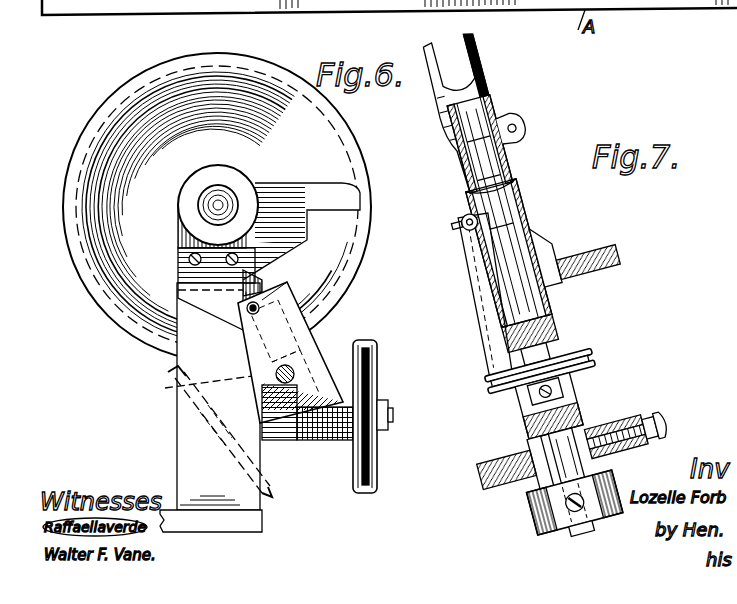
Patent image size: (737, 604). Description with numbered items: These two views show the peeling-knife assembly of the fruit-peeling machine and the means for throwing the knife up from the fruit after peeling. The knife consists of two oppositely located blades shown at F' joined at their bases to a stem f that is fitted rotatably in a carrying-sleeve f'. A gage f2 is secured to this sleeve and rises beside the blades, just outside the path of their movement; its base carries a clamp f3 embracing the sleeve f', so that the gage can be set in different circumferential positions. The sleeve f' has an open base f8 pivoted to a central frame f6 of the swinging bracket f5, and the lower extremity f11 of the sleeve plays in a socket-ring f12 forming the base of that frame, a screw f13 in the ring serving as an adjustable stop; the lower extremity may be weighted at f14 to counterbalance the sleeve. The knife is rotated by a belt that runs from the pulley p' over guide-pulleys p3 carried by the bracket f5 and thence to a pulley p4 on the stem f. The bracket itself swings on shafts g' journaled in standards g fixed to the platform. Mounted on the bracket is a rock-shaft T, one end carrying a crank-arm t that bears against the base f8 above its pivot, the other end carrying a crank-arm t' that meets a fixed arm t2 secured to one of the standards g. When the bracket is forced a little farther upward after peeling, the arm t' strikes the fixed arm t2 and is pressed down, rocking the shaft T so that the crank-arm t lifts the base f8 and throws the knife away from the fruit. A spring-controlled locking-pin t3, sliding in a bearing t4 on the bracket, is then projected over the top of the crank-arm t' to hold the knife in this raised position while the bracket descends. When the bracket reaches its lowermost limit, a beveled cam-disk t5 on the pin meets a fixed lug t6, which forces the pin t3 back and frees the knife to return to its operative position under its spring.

In FIG. 6, the pulley p' is at (230, 207).
In FIG. 6, the standard g is at (200, 407).
In FIG. 6, the shaft g' is at (227, 193).
In FIG. 6, the guide-pulley p3 is at (165, 388).
In FIG. 6, the fixed arm t2 is at (269, 233).
In FIG. 6, the locking-pin t3 is at (258, 306).
In FIG. 6, the bearing t4 is at (290, 306).
In FIG. 6, the cam-disk t5 is at (262, 285).
In FIG. 6, the fixed lug t6 is at (195, 300).
In FIG. 6, the crank-arm t' is at (300, 352).
In FIG. 7, the crank-arm t is at (488, 296).
In FIG. 6, the rock-shaft T is at (296, 371).
In FIG. 7, the rock-shaft T is at (464, 216).
In FIG. 7, the stem f is at (497, 207).
In FIG. 7, the carrying-sleeve f' is at (513, 252).
In FIG. 7, the gage f2 is at (430, 55).
In FIG. 6, the clamp f3 is at (382, 363).
In FIG. 7, the clamp f3 is at (523, 133).
In FIG. 6, the swinging bracket f5 is at (300, 422).
In FIG. 7, the swinging bracket f5 is at (548, 246).
In FIG. 7, the central frame f6 is at (582, 398).
In FIG. 7, the open base f8 is at (560, 331).
In FIG. 7, the lower extremity f11 is at (573, 534).
In FIG. 7, the socket-ring f12 is at (630, 420).
In FIG. 7, the screw f13 is at (668, 423).
In FIG. 7, the weight f14 is at (532, 510).
In FIG. 7, the fork F' is at (466, 70).
In FIG. 7, the pulley p4 is at (596, 359).